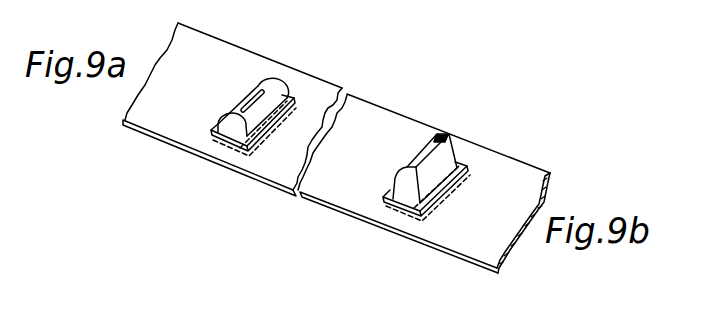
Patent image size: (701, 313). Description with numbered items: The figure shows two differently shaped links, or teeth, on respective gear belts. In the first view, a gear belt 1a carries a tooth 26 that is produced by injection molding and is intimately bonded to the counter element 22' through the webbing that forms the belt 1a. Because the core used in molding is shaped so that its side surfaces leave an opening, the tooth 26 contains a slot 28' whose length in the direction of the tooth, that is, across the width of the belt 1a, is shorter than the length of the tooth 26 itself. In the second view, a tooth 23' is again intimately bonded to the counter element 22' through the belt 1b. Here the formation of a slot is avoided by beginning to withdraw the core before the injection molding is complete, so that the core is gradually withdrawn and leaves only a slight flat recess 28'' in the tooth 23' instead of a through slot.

In FIG. 9A, the gear belt 1a is at (153, 116).
In FIG. 9B, the gear belt 1b is at (467, 242).
In FIG. 9A, the counter element 22' is at (249, 146).
In FIG. 9B, the counter element 22' is at (455, 166).
In FIG. 9B, the tooth 23' is at (446, 145).
In FIG. 9A, the tooth 26 is at (280, 87).
In FIG. 9A, the slot 28' is at (265, 67).
In FIG. 9B, the flat recess 28'' is at (433, 119).